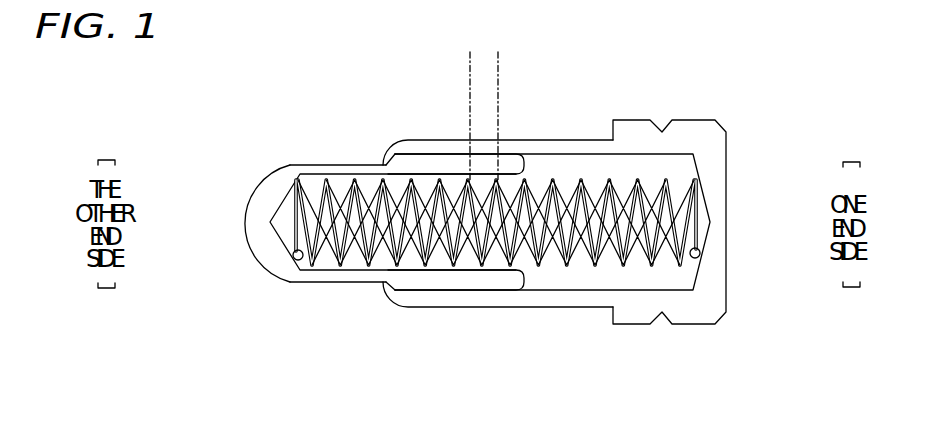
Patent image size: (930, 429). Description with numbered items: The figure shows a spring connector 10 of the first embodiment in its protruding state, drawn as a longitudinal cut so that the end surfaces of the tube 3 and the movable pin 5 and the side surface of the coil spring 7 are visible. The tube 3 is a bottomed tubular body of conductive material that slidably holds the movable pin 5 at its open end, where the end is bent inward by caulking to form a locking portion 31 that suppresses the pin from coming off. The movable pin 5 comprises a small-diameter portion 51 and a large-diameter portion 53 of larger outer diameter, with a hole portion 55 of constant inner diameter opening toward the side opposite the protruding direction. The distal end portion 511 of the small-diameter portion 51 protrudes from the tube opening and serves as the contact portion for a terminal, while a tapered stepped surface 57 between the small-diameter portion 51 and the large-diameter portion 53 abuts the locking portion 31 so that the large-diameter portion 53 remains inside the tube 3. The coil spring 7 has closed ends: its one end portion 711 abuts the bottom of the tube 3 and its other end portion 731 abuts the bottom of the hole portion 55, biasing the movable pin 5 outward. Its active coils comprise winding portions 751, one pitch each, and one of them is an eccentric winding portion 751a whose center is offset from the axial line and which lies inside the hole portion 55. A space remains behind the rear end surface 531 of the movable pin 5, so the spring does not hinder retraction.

The spring connector 10 is at (606, 54).
The tube 3 is at (718, 175).
The locking portion 31 is at (386, 291).
The movable pin 5 is at (455, 100).
The small-diameter portion 51 is at (336, 164).
The distal end portion 511 is at (260, 192).
The large-diameter portion 53 is at (448, 160).
The rear end surface 531 is at (532, 160).
The hole portion 55 is at (441, 268).
The tapered stepped surface 57 is at (388, 292).
The coil spring 7 is at (609, 275).
The one end portion 711 is at (700, 256).
The other end portion 731 is at (293, 258).
The winding portion 751 is at (482, 93).
The eccentric winding portion 751a is at (483, 93).